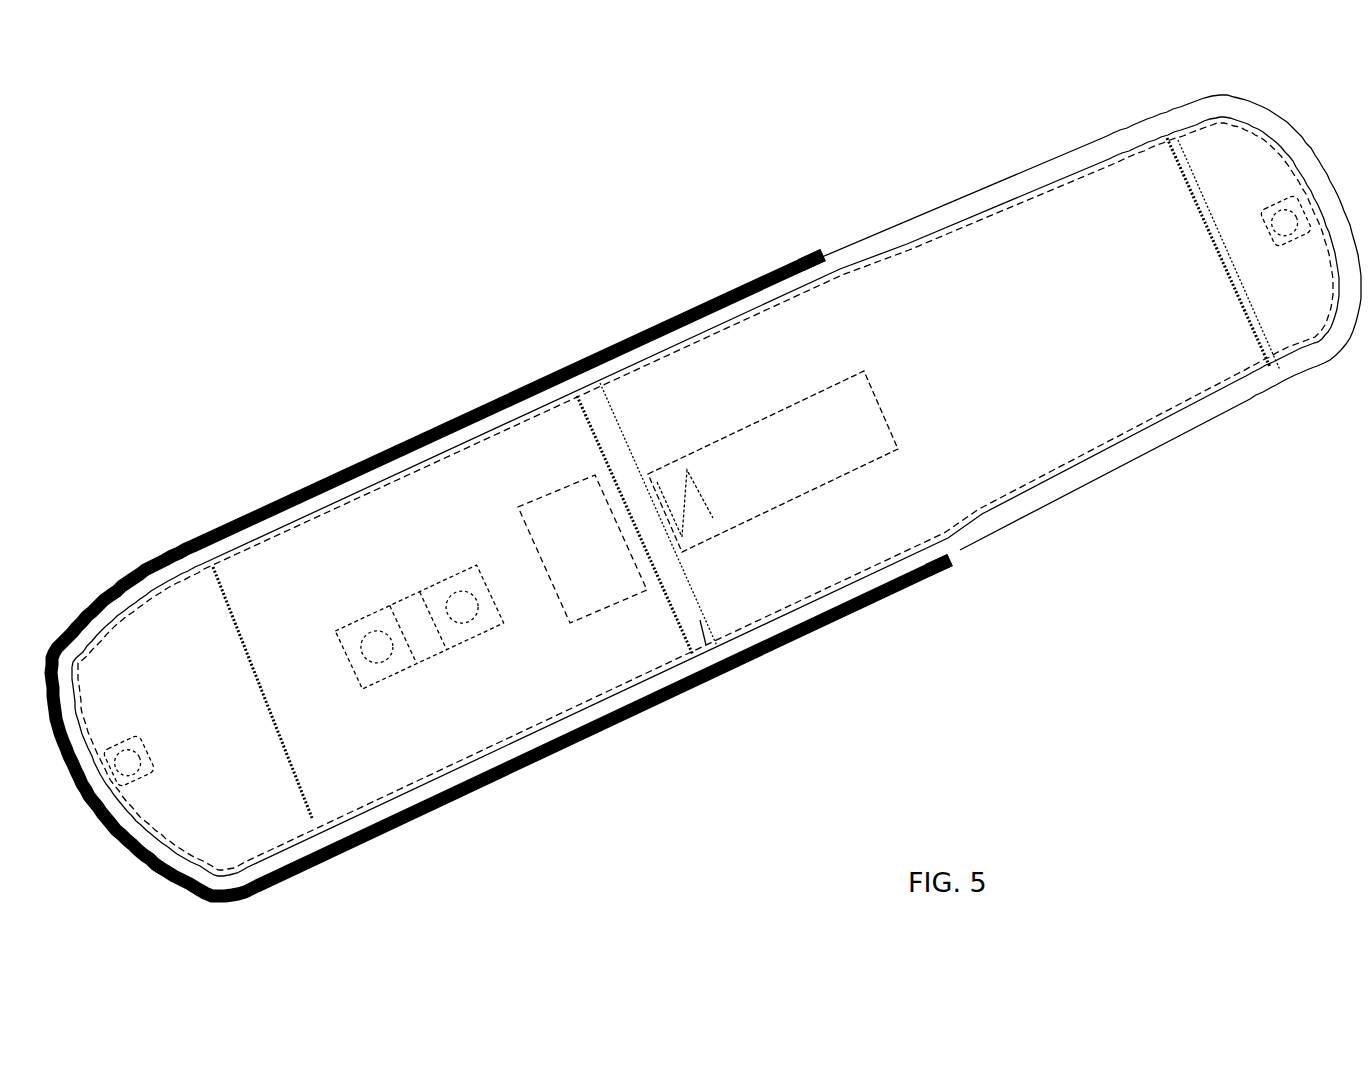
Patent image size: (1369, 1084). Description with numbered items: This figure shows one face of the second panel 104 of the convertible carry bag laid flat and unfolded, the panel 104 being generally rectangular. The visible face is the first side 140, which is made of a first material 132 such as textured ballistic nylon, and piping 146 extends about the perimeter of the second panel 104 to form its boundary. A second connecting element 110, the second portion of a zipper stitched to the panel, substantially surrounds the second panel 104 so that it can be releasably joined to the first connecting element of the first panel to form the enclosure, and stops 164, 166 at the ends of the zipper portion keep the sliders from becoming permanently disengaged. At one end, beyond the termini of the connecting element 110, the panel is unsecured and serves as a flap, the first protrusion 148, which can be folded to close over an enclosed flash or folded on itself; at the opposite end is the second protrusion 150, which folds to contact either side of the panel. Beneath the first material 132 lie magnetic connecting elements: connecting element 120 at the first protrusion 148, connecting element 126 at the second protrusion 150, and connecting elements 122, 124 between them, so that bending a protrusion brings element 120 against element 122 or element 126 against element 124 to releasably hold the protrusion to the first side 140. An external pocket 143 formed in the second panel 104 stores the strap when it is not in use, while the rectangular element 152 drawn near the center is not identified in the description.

The second panel 104 is at (494, 339).
The second connecting element 110 is at (417, 451).
The connecting element 120 is at (1285, 225).
The connecting element 122 is at (462, 607).
The connecting element 124 is at (377, 647).
The connecting element 126 is at (125, 762).
The first material 132 is at (355, 578).
The first side 140 is at (1060, 392).
The external pocket 143 is at (708, 656).
The piping 146 is at (1190, 421).
The first protrusion 148 is at (1118, 234).
The second protrusion 150 is at (157, 675).
The circuit board 152 is at (805, 493).
The stop 164 is at (812, 248).
The stop 166 is at (955, 570).